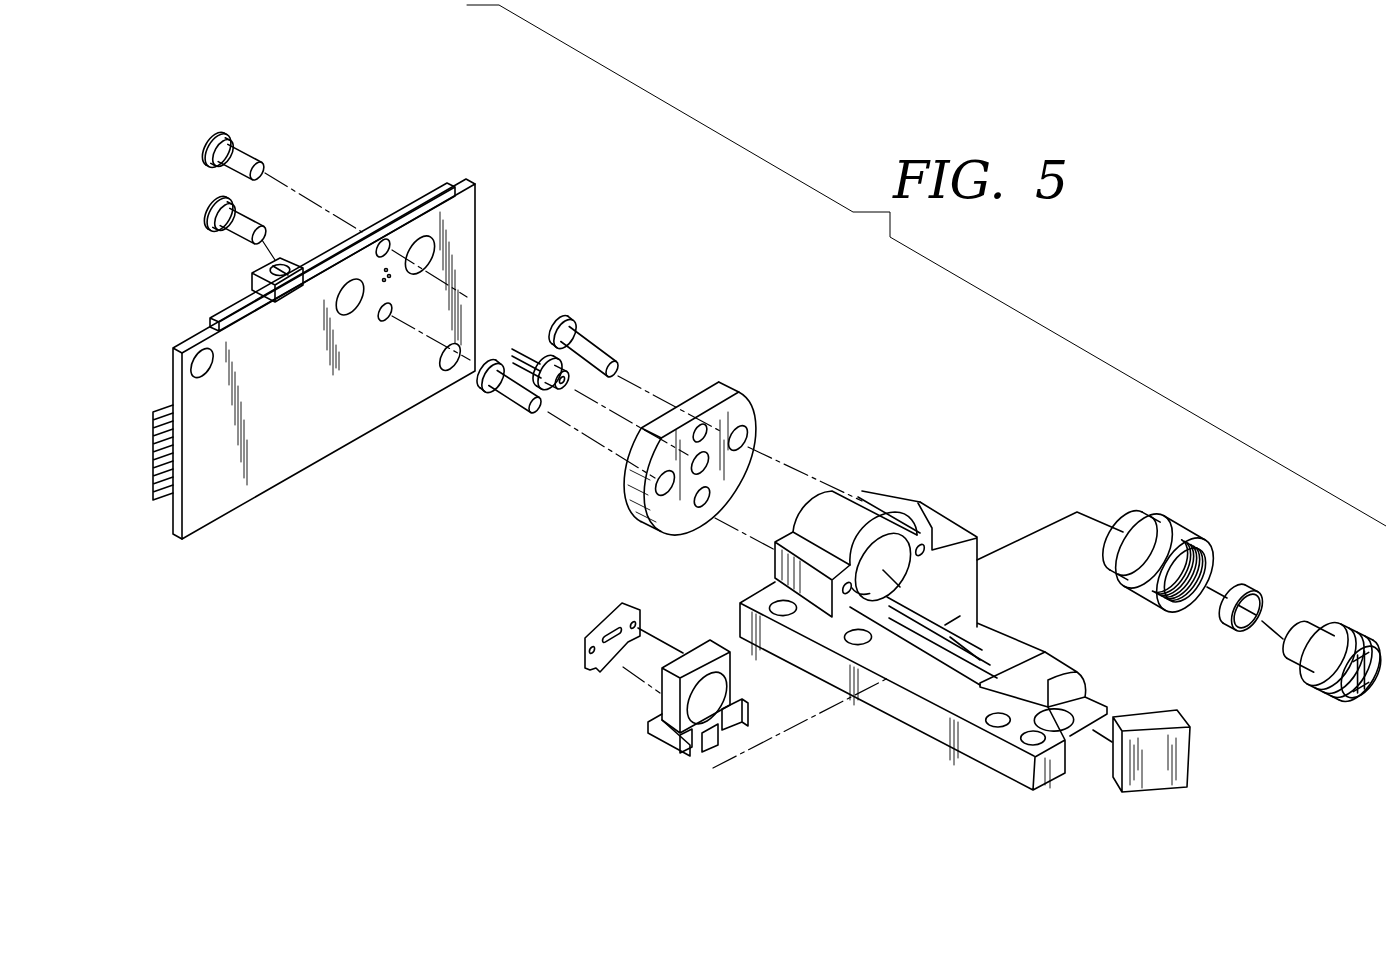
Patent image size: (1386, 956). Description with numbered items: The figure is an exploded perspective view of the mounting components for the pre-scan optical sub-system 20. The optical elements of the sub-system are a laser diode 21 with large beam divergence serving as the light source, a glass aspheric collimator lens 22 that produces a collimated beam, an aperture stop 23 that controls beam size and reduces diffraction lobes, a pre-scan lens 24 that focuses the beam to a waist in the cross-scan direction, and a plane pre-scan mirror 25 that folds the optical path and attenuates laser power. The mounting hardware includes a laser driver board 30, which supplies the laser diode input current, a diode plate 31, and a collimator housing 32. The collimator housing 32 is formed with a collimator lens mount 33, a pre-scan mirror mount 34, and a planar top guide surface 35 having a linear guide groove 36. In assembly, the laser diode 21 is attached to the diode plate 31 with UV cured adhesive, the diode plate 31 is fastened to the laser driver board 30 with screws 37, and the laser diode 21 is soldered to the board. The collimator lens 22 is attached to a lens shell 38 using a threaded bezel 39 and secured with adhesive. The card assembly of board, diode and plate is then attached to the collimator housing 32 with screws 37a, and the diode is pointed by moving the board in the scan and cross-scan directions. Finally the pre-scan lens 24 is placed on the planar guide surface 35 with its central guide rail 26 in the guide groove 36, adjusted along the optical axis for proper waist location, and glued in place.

The pre-scan optical sub-system 20 is at (747, 300).
The laser diode 21 is at (538, 357).
The glass aspheric collimator lens 22 is at (1245, 583).
The aperture stop 23 is at (611, 607).
The pre-scan lens 24 is at (667, 733).
The plane pre-scan mirror 25 is at (1177, 752).
The central guide rail 26 is at (707, 752).
The laser driver board 30 is at (453, 210).
The diode plate 31 is at (735, 411).
The collimator housing 32 is at (957, 733).
The collimator lens mount 33 is at (860, 498).
The pre-scan mirror mount 34 is at (1077, 682).
The planar top guide surface 35 is at (953, 620).
The linear guide groove 36 is at (980, 660).
The screws 37 is at (226, 203).
The screws 37a is at (590, 347).
The lens shell 38 is at (1168, 533).
The threaded bezel 39 is at (1300, 660).